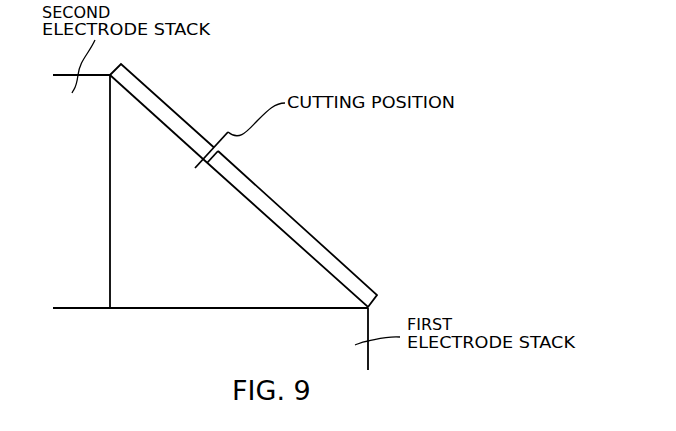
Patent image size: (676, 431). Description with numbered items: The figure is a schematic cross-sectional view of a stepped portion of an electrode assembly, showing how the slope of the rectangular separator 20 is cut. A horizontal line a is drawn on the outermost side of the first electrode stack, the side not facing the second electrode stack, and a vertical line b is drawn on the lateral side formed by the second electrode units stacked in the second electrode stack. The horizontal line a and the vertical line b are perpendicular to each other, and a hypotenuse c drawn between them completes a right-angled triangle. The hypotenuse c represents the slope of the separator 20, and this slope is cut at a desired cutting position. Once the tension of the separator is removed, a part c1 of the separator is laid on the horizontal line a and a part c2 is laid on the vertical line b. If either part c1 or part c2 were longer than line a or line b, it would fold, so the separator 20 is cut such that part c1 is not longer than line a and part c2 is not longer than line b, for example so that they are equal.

The rectangular separator 20 is at (243, 185).
The horizontal line a is at (239, 298).
The vertical line b is at (120, 191).
The hypotenuse c is at (211, 164).
The part of the separator c1 is at (290, 229).
The part of the separator c2 is at (162, 111).